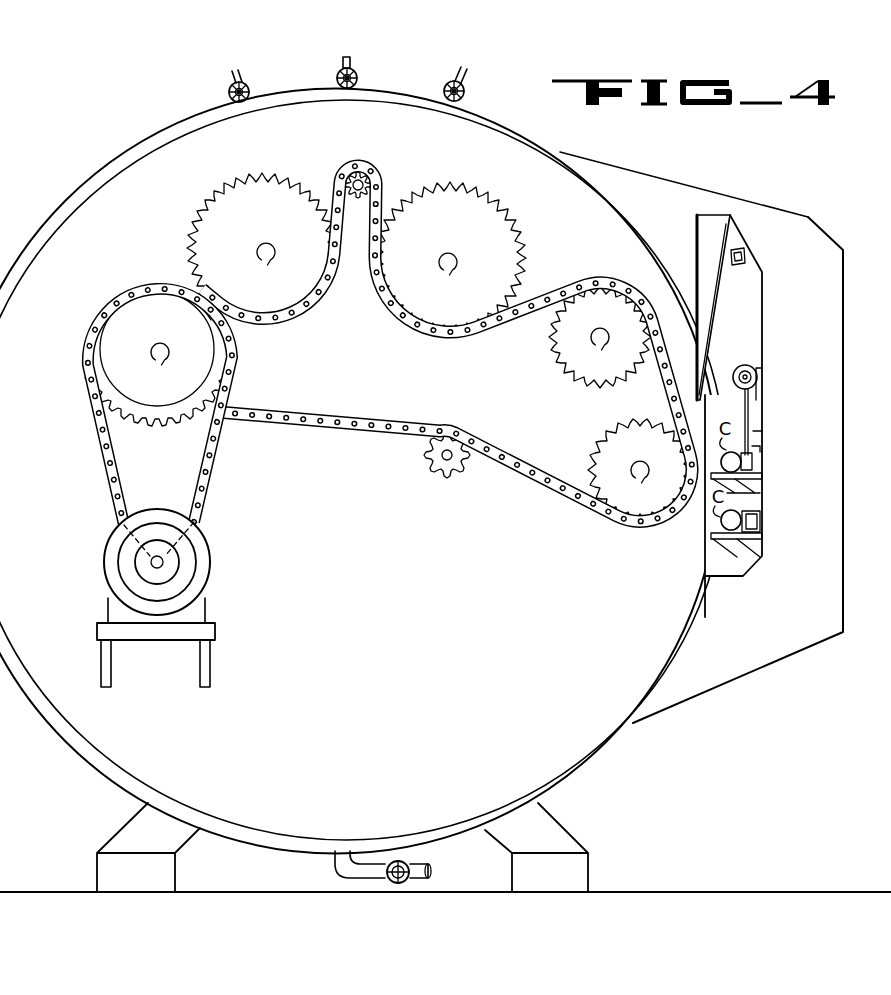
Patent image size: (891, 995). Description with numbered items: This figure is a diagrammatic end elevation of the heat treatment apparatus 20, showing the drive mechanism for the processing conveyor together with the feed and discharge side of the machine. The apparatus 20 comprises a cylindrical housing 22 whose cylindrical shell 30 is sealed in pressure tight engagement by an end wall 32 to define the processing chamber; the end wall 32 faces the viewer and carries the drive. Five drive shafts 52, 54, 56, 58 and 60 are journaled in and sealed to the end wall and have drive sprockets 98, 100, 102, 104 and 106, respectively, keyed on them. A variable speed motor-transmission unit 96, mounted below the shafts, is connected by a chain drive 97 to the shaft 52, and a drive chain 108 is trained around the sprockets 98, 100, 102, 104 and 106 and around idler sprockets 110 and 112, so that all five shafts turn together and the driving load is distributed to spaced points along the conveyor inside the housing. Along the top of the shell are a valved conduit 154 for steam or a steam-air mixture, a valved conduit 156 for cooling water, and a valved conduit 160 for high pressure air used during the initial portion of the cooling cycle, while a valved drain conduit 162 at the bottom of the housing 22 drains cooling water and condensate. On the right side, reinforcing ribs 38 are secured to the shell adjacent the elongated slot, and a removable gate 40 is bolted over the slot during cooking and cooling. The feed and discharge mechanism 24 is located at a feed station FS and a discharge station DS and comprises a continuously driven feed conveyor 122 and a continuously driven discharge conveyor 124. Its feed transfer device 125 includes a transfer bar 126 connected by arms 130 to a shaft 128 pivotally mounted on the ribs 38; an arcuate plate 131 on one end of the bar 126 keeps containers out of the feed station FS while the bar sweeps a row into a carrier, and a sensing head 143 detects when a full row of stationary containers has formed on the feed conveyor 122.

The heat treatment apparatus 20 is at (0, 130).
The cylindrical housing 22 is at (559, 150).
The feed and discharge mechanism 24 is at (762, 400).
The cylindrical shell 30 is at (181, 126).
The end wall 32 is at (359, 578).
The reinforcing ribs 38 is at (785, 216).
The removable gate 40 is at (721, 292).
The drive shaft 52 is at (159, 368).
The drive shaft 54 is at (271, 269).
The drive shaft 56 is at (449, 281).
The drive shaft 58 is at (601, 353).
The drive shaft 60 is at (638, 485).
The variable speed motor-transmission unit 96 is at (211, 548).
The chain drive 97 is at (208, 460).
The drive sprocket 98 is at (146, 325).
The drive sprocket 100 is at (243, 224).
The drive sprocket 102 is at (429, 238).
The drive sprocket 104 is at (581, 322).
The drive sprocket 106 is at (621, 451).
The drive chain 108 is at (380, 178).
The idler sprocket 110 is at (367, 170).
The idler sprocket 112 is at (450, 472).
The feed conveyor 122 is at (738, 480).
The discharge conveyor 124 is at (757, 546).
The feed transfer device 125 is at (758, 431).
The transfer bar 126 is at (753, 458).
The shaft 128 is at (758, 375).
The arms 130 is at (752, 413).
The arcuate plate 131 is at (742, 474).
The sensing head 143 is at (760, 448).
The valved conduit 154 is at (242, 72).
The valved conduit 156 is at (352, 66).
The valved conduit 160 is at (464, 70).
The valved drain conduit 162 is at (417, 866).
The feed station FS is at (775, 440).
The discharge station DS is at (775, 515).